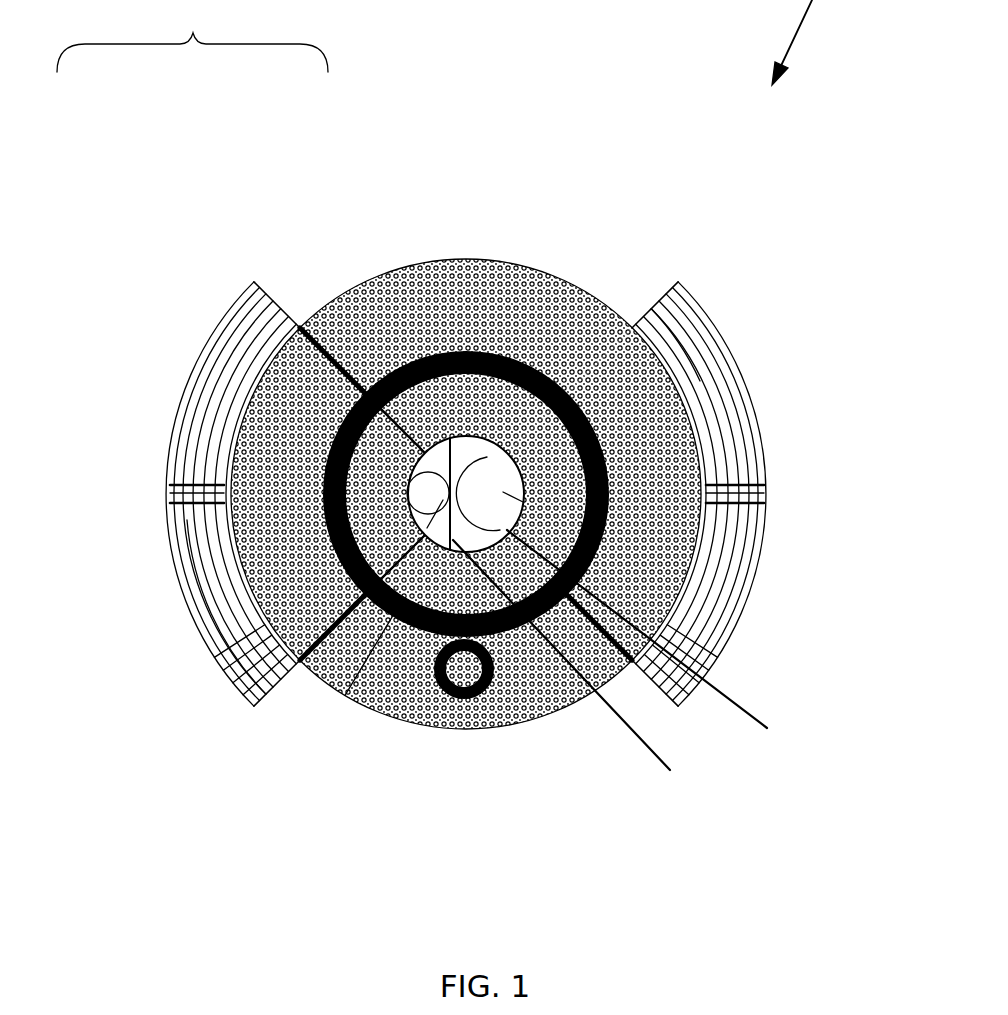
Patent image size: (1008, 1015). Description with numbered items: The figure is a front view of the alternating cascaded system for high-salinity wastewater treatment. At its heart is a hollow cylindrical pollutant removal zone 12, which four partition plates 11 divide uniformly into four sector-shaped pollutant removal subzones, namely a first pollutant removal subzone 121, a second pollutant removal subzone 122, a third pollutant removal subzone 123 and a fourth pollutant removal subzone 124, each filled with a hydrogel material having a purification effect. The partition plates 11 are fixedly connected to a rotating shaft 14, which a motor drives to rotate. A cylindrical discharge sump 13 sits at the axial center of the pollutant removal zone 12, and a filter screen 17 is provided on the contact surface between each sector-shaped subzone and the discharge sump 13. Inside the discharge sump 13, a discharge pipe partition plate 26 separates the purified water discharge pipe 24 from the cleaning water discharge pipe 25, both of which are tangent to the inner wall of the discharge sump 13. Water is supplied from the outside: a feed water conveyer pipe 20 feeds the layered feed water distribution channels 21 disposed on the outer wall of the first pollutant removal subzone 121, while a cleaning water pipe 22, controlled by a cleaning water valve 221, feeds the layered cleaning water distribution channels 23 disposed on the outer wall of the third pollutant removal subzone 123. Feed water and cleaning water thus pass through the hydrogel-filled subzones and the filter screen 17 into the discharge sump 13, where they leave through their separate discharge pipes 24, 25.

The partition plate 11 is at (398, 263).
The pollutant removal zone 12 is at (210, 24).
The first pollutant removal subzone 121 is at (604, 494).
The second pollutant removal subzone 122 is at (466, 356).
The third pollutant removal subzone 123 is at (328, 494).
The fourth pollutant removal subzone 124 is at (466, 632).
The discharge sump 13 is at (813, 728).
The rotating shaft 14 is at (478, 352).
The filter screen 17 is at (703, 202).
The feed water conveyer pipe 20 is at (765, 527).
The feed water distribution channel 21 is at (790, 258).
The cleaning water pipe 22 is at (187, 503).
The cleaning water valve 221 is at (463, 707).
The cleaning water distribution channel 23 is at (254, 282).
The purified water discharge pipe 24 is at (713, 647).
The cleaning water discharge pipe 25 is at (345, 695).
The discharge pipe partition plate 26 is at (713, 770).